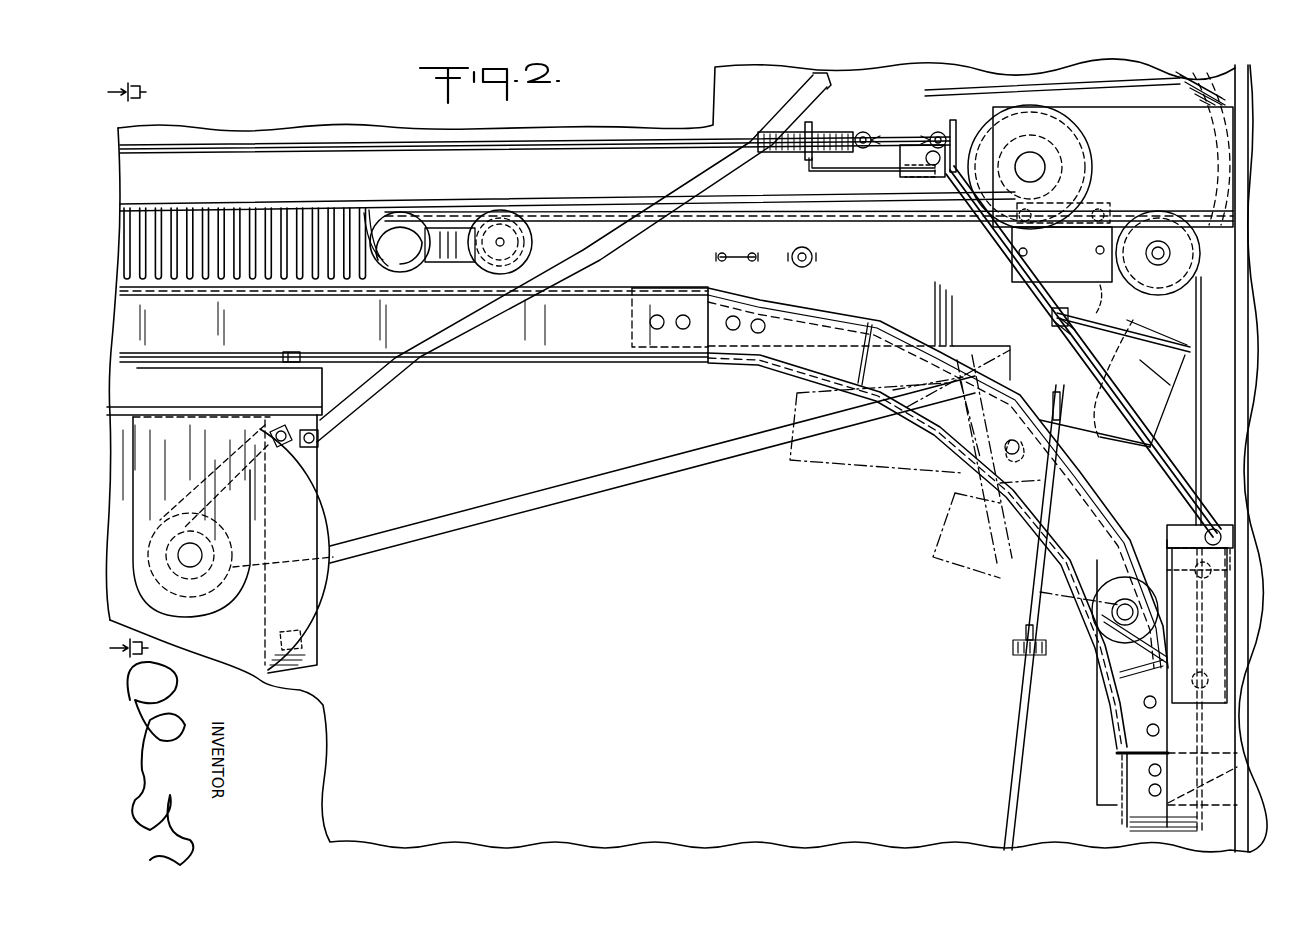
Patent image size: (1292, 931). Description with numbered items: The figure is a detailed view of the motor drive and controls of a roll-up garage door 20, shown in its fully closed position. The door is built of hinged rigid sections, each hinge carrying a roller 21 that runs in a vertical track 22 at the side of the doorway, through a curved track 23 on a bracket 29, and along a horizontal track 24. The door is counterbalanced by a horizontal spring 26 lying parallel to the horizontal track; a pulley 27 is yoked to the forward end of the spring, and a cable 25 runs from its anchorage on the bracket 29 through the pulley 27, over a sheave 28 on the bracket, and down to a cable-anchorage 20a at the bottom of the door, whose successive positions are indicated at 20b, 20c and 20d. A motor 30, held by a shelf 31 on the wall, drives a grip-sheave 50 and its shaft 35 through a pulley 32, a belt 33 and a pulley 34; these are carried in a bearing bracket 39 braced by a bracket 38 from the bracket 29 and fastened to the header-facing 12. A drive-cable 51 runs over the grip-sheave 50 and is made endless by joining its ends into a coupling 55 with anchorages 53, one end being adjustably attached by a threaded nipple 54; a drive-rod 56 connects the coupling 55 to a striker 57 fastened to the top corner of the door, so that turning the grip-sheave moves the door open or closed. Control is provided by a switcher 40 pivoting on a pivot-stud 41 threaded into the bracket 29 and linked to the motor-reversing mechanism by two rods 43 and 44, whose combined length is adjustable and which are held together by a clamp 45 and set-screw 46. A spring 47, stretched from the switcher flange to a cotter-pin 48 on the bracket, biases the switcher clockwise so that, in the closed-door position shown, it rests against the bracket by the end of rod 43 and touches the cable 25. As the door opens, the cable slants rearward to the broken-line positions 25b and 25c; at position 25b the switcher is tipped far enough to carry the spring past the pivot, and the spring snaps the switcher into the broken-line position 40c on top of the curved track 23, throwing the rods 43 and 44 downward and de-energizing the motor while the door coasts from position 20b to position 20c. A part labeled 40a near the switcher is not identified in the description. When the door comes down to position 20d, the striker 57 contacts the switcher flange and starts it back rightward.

The header-facing 12 is at (1240, 400).
The door 20 is at (1232, 804).
The cable-anchorage 20a is at (968, 456).
The door bottom position 20b is at (950, 572).
The door bottom position 20c is at (875, 478).
The door position 20d is at (821, 333).
The roller 21 is at (1130, 642).
The vertical track 22 is at (1115, 815).
The curved track 23 is at (762, 368).
The horizontal track 24 is at (540, 370).
The cable 25 is at (660, 212).
The cable slanted position 25b is at (1213, 190).
The cable slanted position 25c is at (1118, 380).
The horizontal spring 26 is at (228, 230).
The pulley 27 is at (525, 252).
The sheave 28 is at (1162, 212).
The bracket 29 is at (728, 250).
The motor 30 is at (318, 603).
The shelf 31 is at (310, 398).
The pulley 32 is at (240, 540).
The belt 33 is at (410, 395).
The pulley 34 is at (832, 100).
The shaft 35 is at (1040, 155).
The bracket 38 is at (1078, 238).
The bracket 39 is at (1120, 103).
The switcher 40 is at (1100, 320).
The link arm 40a is at (1150, 431).
The switcher thrown position 40c is at (1095, 286).
The pivot-stud 41 is at (1145, 374).
The rod 43 is at (1058, 400).
The rod 44 is at (1020, 690).
The clamp 45 is at (1025, 632).
The set-screw 46 is at (1013, 650).
The spring 47 is at (1052, 312).
The cotter-pin 48 is at (1202, 689).
The grip-sheave 50 is at (980, 133).
The drive-cable 51 is at (395, 152).
The anchorage 53 is at (872, 134).
The nipple 54 is at (845, 132).
The coupling 55 is at (850, 172).
The drive-rod 56 is at (990, 245).
The striker 57 is at (1165, 530).